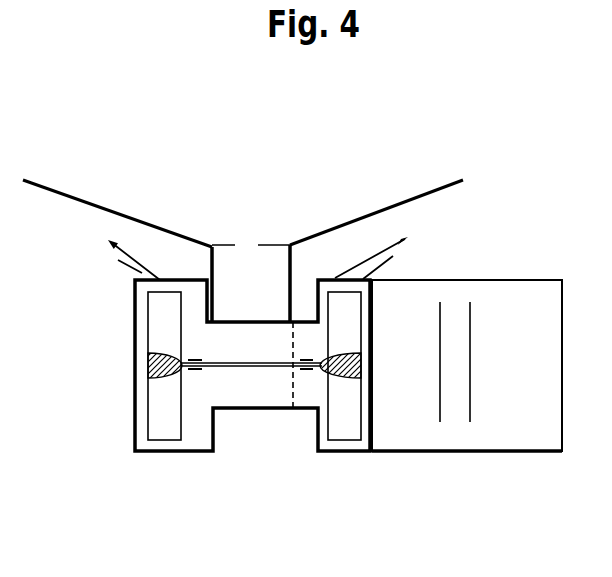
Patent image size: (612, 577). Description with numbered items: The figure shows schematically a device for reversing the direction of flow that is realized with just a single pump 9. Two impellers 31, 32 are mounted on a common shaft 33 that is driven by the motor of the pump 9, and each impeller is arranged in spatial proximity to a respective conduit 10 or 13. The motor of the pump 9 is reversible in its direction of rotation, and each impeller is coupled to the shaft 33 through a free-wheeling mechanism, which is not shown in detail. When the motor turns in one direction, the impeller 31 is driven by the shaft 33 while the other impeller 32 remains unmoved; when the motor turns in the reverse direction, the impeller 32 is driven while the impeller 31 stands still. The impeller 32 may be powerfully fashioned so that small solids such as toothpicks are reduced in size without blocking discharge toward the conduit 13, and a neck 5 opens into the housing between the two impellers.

The inlet neck / feed channel 5 is at (217, 285).
The pump 9 is at (500, 435).
The conduit 10 is at (365, 262).
The conduit 13 is at (152, 268).
The impeller 31 is at (345, 430).
The impeller 32 is at (162, 423).
The shaft 33 is at (243, 363).